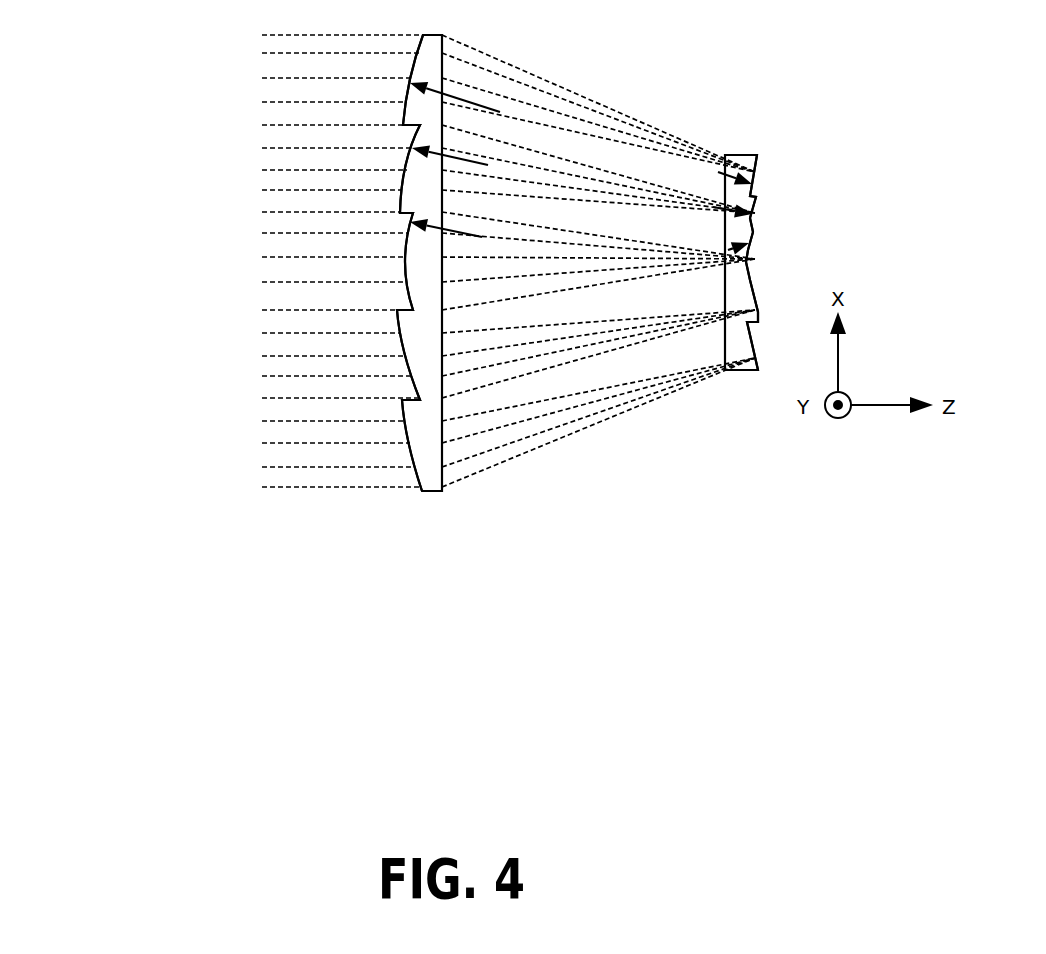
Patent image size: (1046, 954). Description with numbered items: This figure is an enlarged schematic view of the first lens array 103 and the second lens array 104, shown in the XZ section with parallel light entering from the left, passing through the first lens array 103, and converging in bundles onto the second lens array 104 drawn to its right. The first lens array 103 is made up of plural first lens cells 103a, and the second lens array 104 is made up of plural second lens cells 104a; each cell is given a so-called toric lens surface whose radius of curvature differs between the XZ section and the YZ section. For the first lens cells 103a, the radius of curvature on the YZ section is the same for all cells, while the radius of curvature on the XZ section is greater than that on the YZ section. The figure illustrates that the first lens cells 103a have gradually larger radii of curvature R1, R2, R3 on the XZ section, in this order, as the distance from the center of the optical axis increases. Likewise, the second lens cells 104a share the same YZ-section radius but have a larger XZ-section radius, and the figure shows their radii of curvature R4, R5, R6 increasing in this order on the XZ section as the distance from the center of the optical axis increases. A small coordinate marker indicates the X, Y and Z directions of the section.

The first lens array 103 is at (432, 472).
The first lens cell 103a is at (403, 185).
The second lens array 104 is at (748, 376).
The second lens cell 104a is at (752, 210).
The radius of curvature R1 is at (465, 230).
The radius of curvature R2 is at (462, 157).
The radius of curvature R3 is at (460, 93).
The radius of curvature R4 is at (750, 237).
The radius of curvature R5 is at (755, 199).
The radius of curvature R6 is at (720, 172).